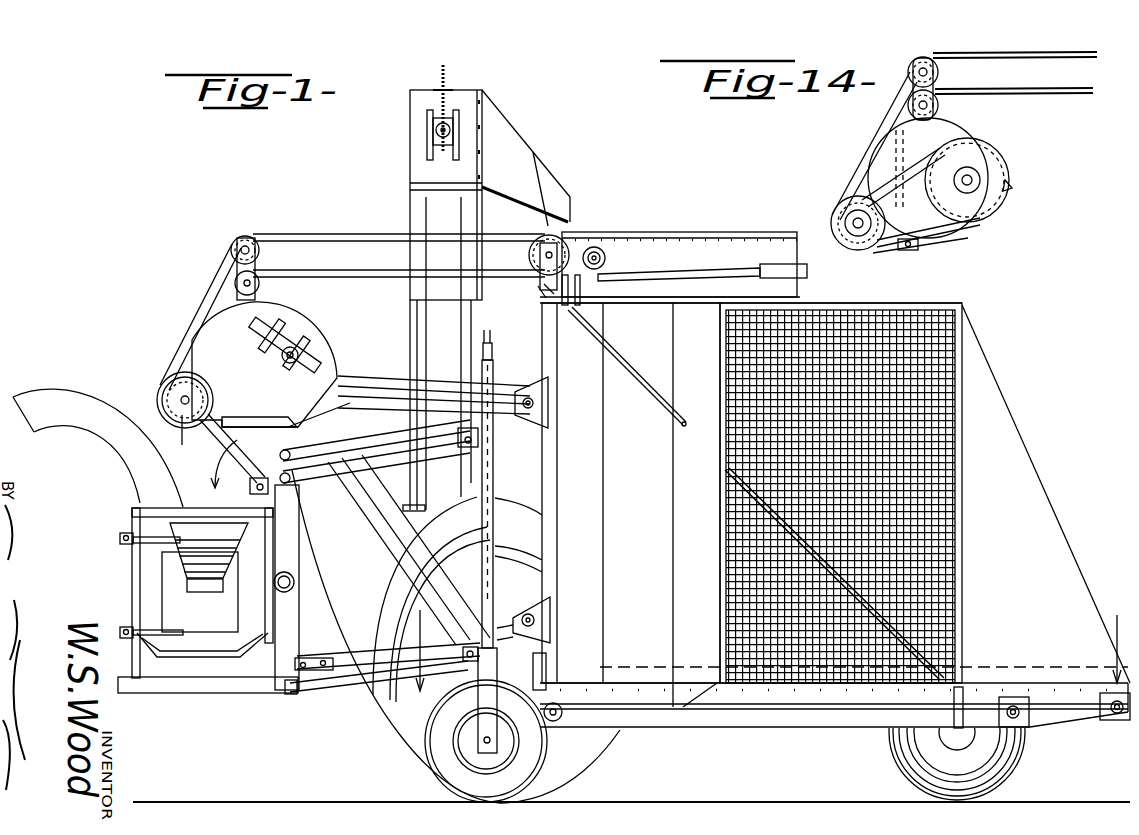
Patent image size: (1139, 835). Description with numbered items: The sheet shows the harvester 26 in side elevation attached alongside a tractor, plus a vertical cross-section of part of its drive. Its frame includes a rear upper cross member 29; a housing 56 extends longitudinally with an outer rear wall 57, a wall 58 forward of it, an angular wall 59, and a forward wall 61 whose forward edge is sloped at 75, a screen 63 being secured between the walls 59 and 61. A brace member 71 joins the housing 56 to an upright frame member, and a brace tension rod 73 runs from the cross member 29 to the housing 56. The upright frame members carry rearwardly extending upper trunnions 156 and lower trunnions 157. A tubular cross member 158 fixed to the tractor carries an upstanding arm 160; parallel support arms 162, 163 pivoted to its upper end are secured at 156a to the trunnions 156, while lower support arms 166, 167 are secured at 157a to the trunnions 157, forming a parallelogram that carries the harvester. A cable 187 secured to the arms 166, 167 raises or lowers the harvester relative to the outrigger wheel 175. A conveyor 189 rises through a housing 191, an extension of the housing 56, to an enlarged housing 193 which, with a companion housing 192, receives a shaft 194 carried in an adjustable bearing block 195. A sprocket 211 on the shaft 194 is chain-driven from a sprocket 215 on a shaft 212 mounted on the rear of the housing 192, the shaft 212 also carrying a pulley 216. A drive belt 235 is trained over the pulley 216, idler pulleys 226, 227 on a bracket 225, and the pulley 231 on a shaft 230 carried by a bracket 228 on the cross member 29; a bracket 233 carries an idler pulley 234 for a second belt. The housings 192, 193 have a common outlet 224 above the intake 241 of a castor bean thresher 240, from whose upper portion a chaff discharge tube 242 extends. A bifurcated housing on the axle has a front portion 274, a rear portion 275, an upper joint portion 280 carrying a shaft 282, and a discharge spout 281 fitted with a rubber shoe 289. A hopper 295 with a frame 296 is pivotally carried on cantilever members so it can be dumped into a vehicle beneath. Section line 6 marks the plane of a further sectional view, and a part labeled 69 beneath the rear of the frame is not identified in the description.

In FIG. 1, the section line 6- 6 is at (767, 638).
In FIG. 1, the harvesting mechanism 26 is at (728, 740).
In FIG. 1, the rear upper cross member 29 is at (545, 306).
In FIG. 1, the housing 56 is at (848, 722).
In FIG. 1, the outer rear wall 57 is at (595, 498).
In FIG. 1, the wall 58 is at (655, 544).
In FIG. 1, the angular wall 59 is at (708, 536).
In FIG. 1, the forward wall 61 is at (1022, 562).
In FIG. 1, the screen 63 is at (943, 462).
In FIG. 1, the rear wheel 69 is at (806, 697).
In FIG. 1, the brace member 71 is at (572, 664).
In FIG. 1, the brace tension rod 73 is at (637, 388).
In FIG. 1, the sloped forward edge 75 is at (1035, 462).
In FIG. 1, the upper trunnions 156 is at (538, 420).
In FIG. 1, the pivot connection 156a is at (490, 386).
In FIG. 1, the lower trunnions 157 is at (556, 615).
In FIG. 1, the pivot connection 157a is at (552, 623).
In FIG. 1, the tubular cross member 158 is at (318, 584).
In FIG. 1, the upstanding arm 160 is at (290, 530).
In FIG. 1, the support arm 162 is at (386, 415).
In FIG. 1, the support arm 163 is at (420, 400).
In FIG. 1, the support arm 166 is at (338, 662).
In FIG. 1, the support arm 167 is at (392, 648).
In FIG. 1, the wheel 175 is at (530, 778).
In FIG. 1, the cable 187 is at (488, 352).
In FIG. 1, the conveyor 189 is at (446, 544).
In FIG. 1, the housing 191 is at (396, 546).
In FIG. 14, the enlarged housing 192 is at (883, 158).
In FIG. 1, the enlarged housing 193 is at (245, 359).
In FIG. 1, the shaft 194 is at (286, 402).
In FIG. 14, the shaft 194 is at (972, 184).
In FIG. 1, the adjustable bearing block 195 is at (312, 330).
In FIG. 14, the sprocket 211 is at (1010, 176).
In FIG. 1, the shaft 212 is at (184, 399).
In FIG. 14, the shaft 212 is at (856, 229).
In FIG. 1, the sprocket 215 is at (207, 464).
In FIG. 14, the sprocket 215 is at (842, 213).
In FIG. 1, the pulley 216 is at (168, 382).
In FIG. 14, the pulley 216 is at (876, 251).
In FIG. 1, the common outlet 224 is at (282, 486).
In FIG. 1, the bracket 225 is at (232, 262).
In FIG. 14, the bracket 225 is at (910, 90).
In FIG. 1, the idler pulley 226 is at (259, 285).
In FIG. 14, the idler pulley 226 is at (940, 109).
In FIG. 1, the idler pulley 227 is at (256, 240).
In FIG. 14, the idler pulley 227 is at (940, 74).
In FIG. 1, the bracket 228 is at (165, 686).
In FIG. 1, the shaft 230 is at (553, 251).
In FIG. 1, the pulley 231 is at (534, 242).
In FIG. 1, the bracket 233 is at (610, 286).
In FIG. 1, the idler pulley 234 is at (606, 258).
In FIG. 1, the drive belt 235 is at (377, 272).
In FIG. 14, the drive belt 235 is at (1027, 96).
In FIG. 1, the castor bean thresher 240 is at (209, 690).
In FIG. 1, the intake 241 is at (209, 557).
In FIG. 1, the chaff discharge tube 242 is at (68, 392).
In FIG. 1, the front portion 274 is at (460, 224).
In FIG. 1, the rear portion 275 is at (413, 223).
In FIG. 1, the joint portion 280 is at (413, 158).
In FIG. 1, the discharge spout 281 is at (533, 158).
In FIG. 1, the shaft 282 is at (447, 122).
In FIG. 1, the rubber shoe 289 is at (572, 210).
In FIG. 1, the hopper 295 is at (690, 252).
In FIG. 1, the frame 296 is at (646, 233).